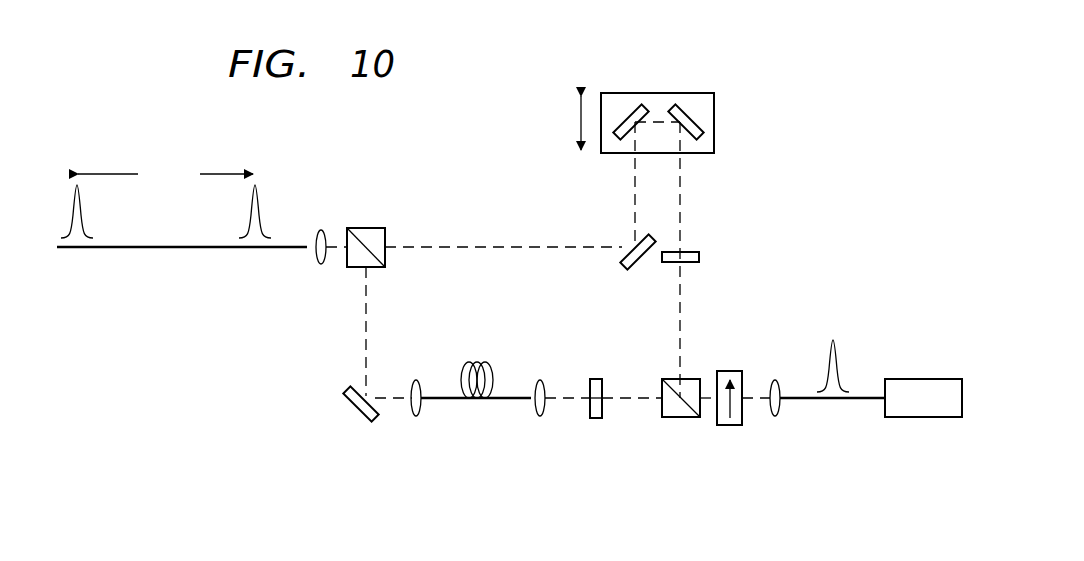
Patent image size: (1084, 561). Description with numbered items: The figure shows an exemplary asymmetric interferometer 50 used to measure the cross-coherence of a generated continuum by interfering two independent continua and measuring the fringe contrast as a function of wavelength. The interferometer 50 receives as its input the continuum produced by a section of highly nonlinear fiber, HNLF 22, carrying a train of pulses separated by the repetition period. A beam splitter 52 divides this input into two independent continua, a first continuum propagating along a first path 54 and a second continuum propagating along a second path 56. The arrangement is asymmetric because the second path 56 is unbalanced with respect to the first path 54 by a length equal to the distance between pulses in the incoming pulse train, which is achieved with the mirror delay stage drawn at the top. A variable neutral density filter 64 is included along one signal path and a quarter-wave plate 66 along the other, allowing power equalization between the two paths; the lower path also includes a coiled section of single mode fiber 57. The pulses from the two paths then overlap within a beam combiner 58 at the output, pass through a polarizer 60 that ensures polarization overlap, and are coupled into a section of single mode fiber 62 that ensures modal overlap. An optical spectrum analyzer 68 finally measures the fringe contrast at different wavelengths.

The asymmetric interferometer 50 is at (830, 126).
The HNLF 22 is at (110, 247).
The beam splitter 52 is at (365, 228).
The first path 54 is at (493, 247).
The second path 56 is at (366, 330).
The single mode fiber (SMF) 57 is at (455, 398).
The beam combiner 58 is at (665, 418).
The polarizer 60 is at (730, 370).
The single mode fiber 62 is at (812, 398).
The variable neutral density filter 64 is at (690, 252).
The quarter-wave plate 66 is at (595, 378).
The optical spectrum analyzer 68 is at (921, 378).